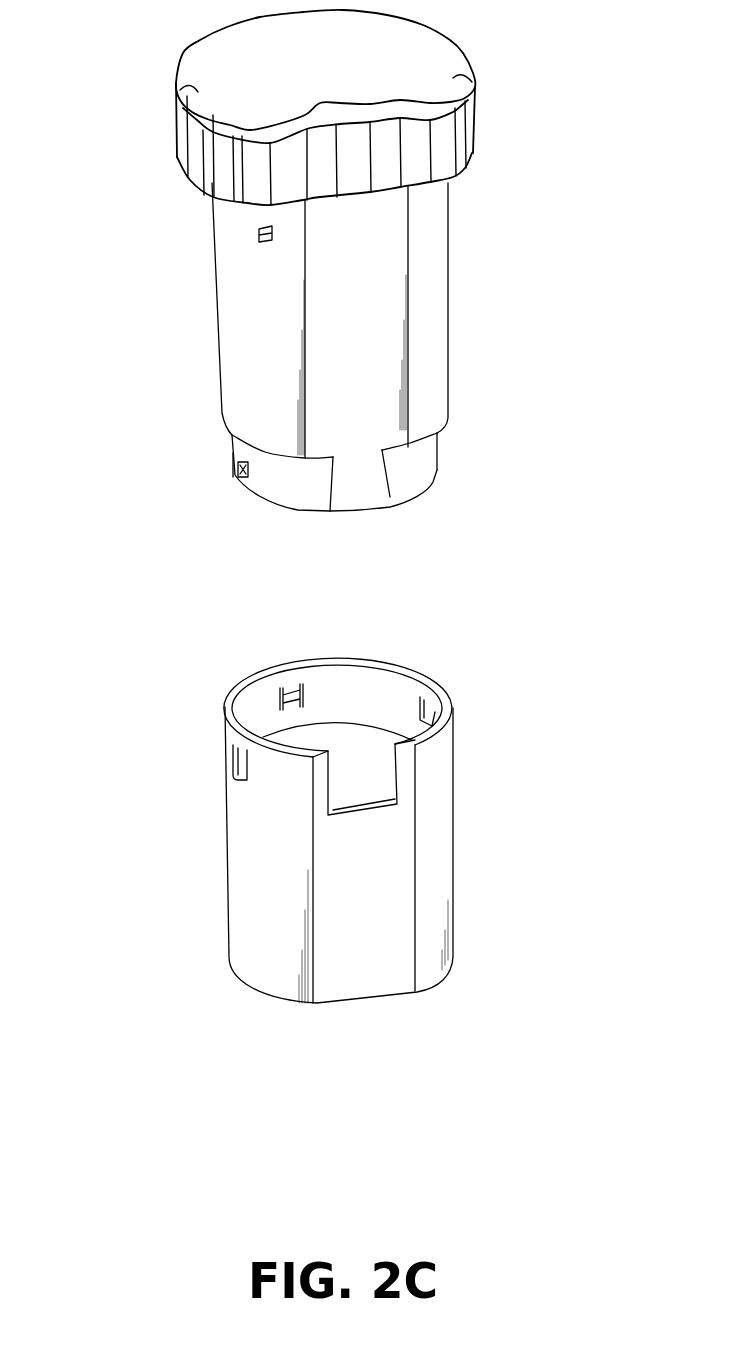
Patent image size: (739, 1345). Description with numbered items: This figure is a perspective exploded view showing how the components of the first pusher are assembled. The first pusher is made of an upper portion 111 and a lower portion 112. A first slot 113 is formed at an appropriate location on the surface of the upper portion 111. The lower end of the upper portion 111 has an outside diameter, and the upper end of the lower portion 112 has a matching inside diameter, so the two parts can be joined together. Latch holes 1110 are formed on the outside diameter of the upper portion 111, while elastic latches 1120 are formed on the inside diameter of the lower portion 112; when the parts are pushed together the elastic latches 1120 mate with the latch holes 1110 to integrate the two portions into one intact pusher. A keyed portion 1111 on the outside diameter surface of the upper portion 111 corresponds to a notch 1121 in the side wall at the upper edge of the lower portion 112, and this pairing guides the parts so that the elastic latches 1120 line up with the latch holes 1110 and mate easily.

The upper portion 111 is at (425, 248).
The first slot 113 is at (257, 238).
The latch holes 1110 is at (235, 473).
The keyed portion 1111 is at (375, 485).
The lower portion 112 is at (253, 857).
The elastic latches 1120 is at (303, 712).
The notch 1121 is at (370, 787).